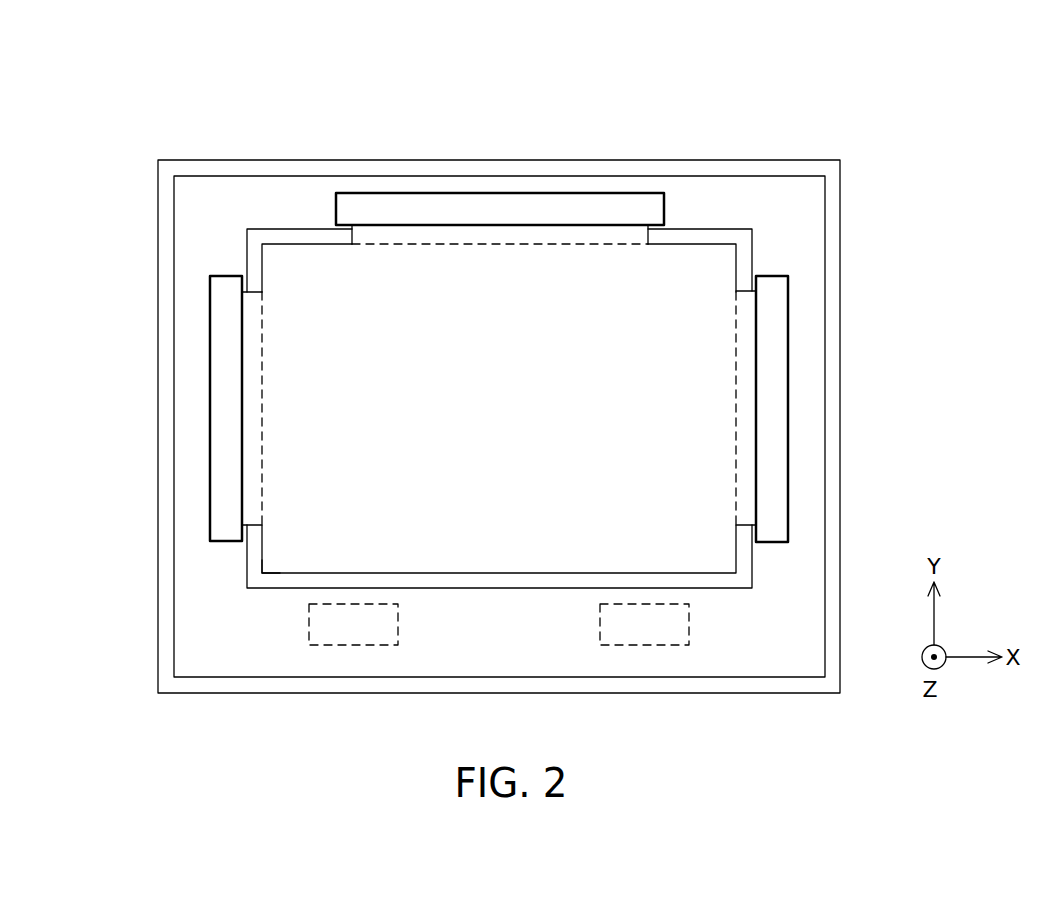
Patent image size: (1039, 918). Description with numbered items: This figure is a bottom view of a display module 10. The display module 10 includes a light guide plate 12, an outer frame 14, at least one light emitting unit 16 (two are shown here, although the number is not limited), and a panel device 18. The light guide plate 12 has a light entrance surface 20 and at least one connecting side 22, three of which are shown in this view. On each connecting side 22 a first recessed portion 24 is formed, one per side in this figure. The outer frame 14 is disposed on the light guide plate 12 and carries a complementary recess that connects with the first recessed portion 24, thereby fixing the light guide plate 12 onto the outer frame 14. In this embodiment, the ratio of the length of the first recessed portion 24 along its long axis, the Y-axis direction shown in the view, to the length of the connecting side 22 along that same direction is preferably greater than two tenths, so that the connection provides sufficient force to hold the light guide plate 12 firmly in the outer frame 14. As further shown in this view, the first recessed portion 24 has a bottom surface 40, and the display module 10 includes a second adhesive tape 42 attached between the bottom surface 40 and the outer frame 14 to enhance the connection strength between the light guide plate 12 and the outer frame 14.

The display module 10 is at (931, 122).
The light guide plate 12 is at (503, 420).
The outer frame 14 is at (198, 257).
The light emitting unit 16 is at (353, 636).
The panel device 18 is at (656, 160).
The light entrance surface 20 is at (713, 573).
The connecting side 22 is at (258, 566).
The first recessed portion 24 is at (257, 286).
The bottom surface 40 is at (253, 485).
The second adhesive tape 42 is at (223, 410).